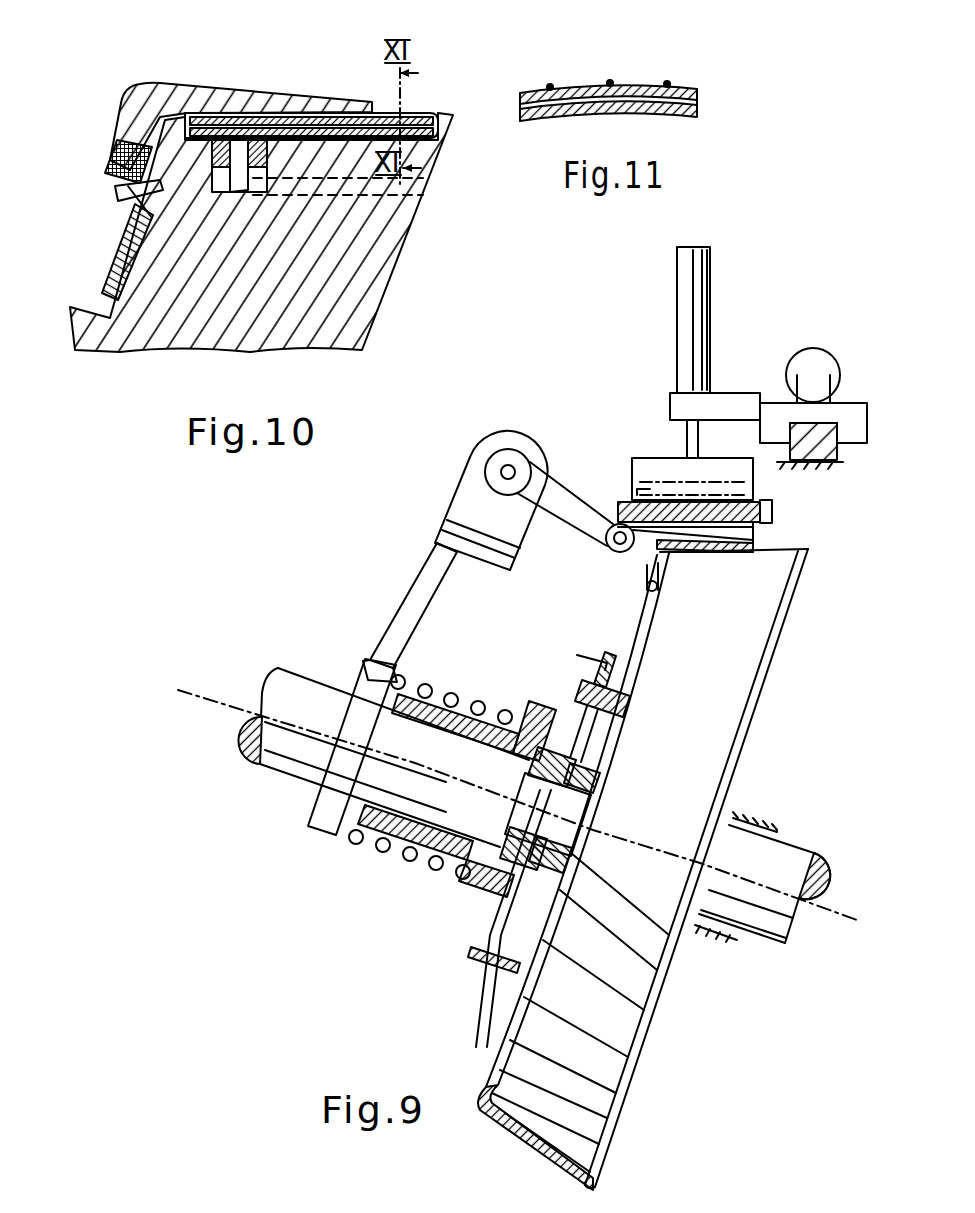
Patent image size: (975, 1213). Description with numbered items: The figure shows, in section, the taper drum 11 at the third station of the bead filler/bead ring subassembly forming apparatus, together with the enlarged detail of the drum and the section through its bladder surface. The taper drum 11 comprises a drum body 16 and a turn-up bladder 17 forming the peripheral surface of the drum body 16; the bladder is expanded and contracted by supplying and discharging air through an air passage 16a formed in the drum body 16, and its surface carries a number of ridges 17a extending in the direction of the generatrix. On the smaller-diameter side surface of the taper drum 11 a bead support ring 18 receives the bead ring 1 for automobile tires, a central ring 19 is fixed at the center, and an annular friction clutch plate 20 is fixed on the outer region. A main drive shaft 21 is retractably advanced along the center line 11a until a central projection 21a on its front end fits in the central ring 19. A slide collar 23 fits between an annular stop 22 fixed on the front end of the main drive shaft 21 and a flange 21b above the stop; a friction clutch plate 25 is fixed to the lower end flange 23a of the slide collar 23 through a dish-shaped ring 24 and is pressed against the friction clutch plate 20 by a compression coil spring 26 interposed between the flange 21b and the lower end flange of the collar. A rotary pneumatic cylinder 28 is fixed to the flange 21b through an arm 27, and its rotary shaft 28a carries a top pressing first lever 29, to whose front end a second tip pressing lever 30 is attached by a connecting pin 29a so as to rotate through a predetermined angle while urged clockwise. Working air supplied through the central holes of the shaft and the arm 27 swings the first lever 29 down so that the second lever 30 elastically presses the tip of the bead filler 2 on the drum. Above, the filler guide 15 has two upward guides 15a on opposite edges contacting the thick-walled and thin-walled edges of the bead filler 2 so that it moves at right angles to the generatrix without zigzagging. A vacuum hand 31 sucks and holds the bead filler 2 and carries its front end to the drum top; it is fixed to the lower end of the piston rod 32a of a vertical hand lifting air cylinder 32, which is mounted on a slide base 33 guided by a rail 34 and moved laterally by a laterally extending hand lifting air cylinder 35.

In FIG. 10, the bead ring 1 is at (108, 172).
In FIG. 9, the bead ring 1 is at (643, 586).
In FIG. 10, the bead filler 2 is at (211, 85).
In FIG. 10, the taper drum 11 is at (400, 267).
In FIG. 9, the taper drum 11 is at (628, 1114).
In FIG. 9, the center line 11a is at (223, 703).
In FIG. 9, the filler guide 15 is at (773, 523).
In FIG. 9, the upward guides 15a is at (623, 505).
In FIG. 10, the drum body 16 is at (365, 305).
In FIG. 9, the drum body 16 is at (743, 753).
In FIG. 10, the air passage 16a is at (378, 190).
In FIG. 10, the turn-up bladder 17 is at (297, 105).
In FIG. 11, the turn-up bladder 17 is at (696, 90).
In FIG. 9, the turn-up bladder 17 is at (730, 717).
In FIG. 11, the ridges 17a is at (553, 84).
In FIG. 10, the bead support ring 18 is at (120, 197).
In FIG. 9, the bead support ring 18 is at (660, 607).
In FIG. 9, the central ring 19 is at (587, 783).
In FIG. 9, the annular friction clutch plate 20 is at (623, 680).
In FIG. 9, the main drive shaft 21 is at (273, 753).
In FIG. 9, the central projection 21a is at (545, 840).
In FIG. 9, the flange 21b is at (323, 823).
In FIG. 9, the annular stop 22 is at (533, 937).
In FIG. 9, the slide collar 23 is at (410, 830).
In FIG. 9, the lower end flange 23a is at (477, 887).
In FIG. 9, the dish-shaped ring 24 is at (483, 963).
In FIG. 9, the friction clutch plate 25 is at (610, 660).
In FIG. 9, the compression coil spring 26 is at (450, 688).
In FIG. 9, the arm 27 is at (410, 603).
In FIG. 9, the rotary pneumatic cylinder 28 is at (457, 490).
In FIG. 9, the rotary shaft 28a is at (505, 467).
In FIG. 9, the top pressing first lever 29 is at (560, 487).
In FIG. 9, the connecting pin 29a is at (608, 545).
In FIG. 9, the second tip pressing lever 30 is at (650, 543).
In FIG. 9, the vacuum hand 31 is at (710, 460).
In FIG. 9, the hand lifting air cylinder 32 is at (680, 307).
In FIG. 9, the piston rod 32a is at (684, 434).
In FIG. 9, the slide base 33 is at (850, 415).
In FIG. 9, the rail 34 is at (827, 447).
In FIG. 9, the laterally extending hand lifting air cylinder 35 is at (838, 363).